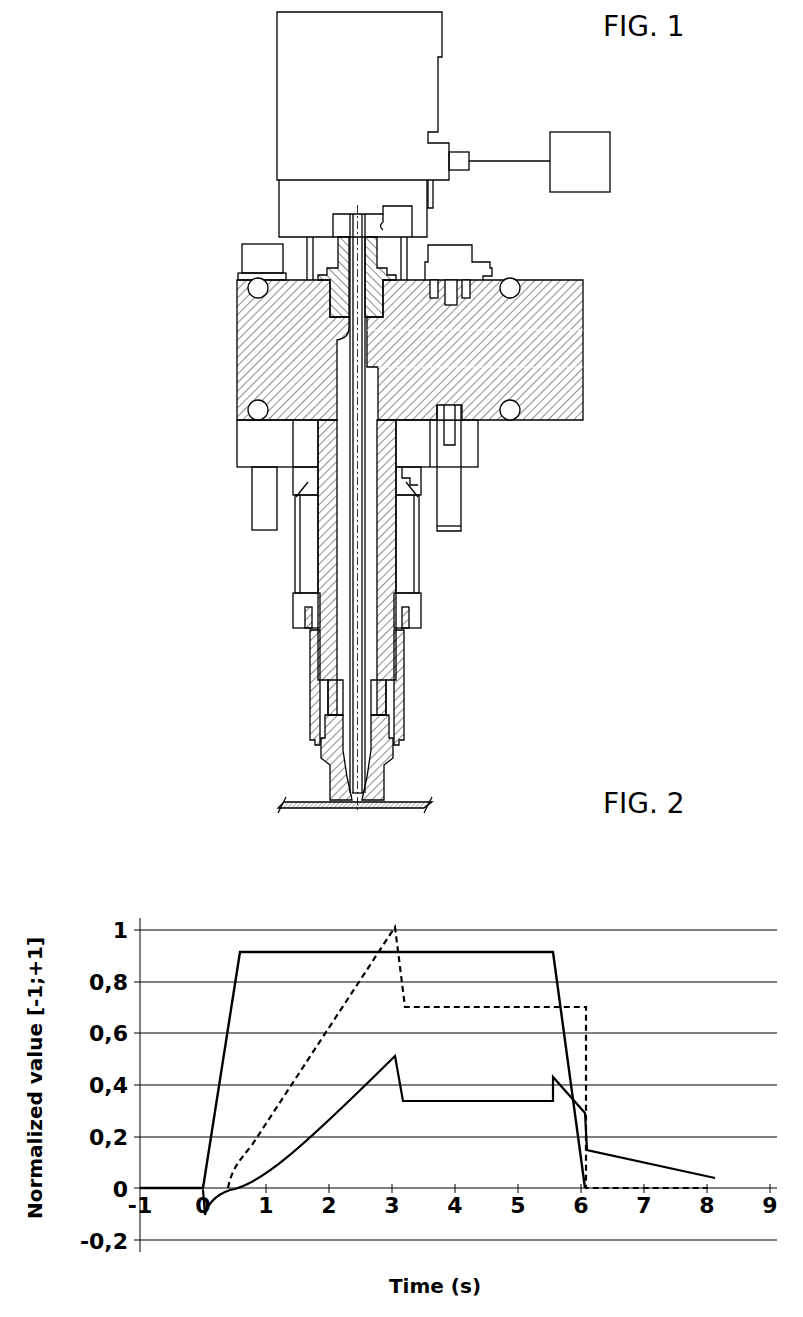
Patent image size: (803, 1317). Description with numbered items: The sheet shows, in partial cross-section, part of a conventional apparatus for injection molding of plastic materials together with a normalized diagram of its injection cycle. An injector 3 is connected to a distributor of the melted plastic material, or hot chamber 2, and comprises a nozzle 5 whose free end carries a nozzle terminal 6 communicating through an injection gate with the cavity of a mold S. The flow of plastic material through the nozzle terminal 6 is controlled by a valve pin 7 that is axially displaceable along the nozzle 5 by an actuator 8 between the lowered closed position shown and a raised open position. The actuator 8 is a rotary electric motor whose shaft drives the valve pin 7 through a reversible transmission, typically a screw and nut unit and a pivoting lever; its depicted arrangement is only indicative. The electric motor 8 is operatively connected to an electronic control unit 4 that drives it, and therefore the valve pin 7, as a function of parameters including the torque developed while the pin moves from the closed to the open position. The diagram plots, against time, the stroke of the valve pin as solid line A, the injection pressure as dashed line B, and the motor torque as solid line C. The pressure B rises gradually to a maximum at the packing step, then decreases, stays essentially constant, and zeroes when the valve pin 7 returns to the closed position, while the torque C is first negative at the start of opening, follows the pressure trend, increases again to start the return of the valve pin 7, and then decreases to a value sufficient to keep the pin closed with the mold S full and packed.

In FIG. 1, the hot chamber 2 is at (256, 328).
In FIG. 1, the injector 3 is at (296, 690).
In FIG. 1, the electronic control unit 4 is at (580, 146).
In FIG. 1, the nozzle 5 is at (405, 675).
In FIG. 1, the nozzle terminal 6 is at (386, 783).
In FIG. 1, the valve pin 7 is at (363, 540).
In FIG. 1, the actuator 8 is at (297, 74).
In FIG. 1, the mold S is at (306, 808).
In FIG. 2, the stroke of the valve pin A is at (270, 950).
In FIG. 2, the injection pressure B is at (465, 1007).
In FIG. 2, the torque developed by the electric motor C is at (290, 1153).